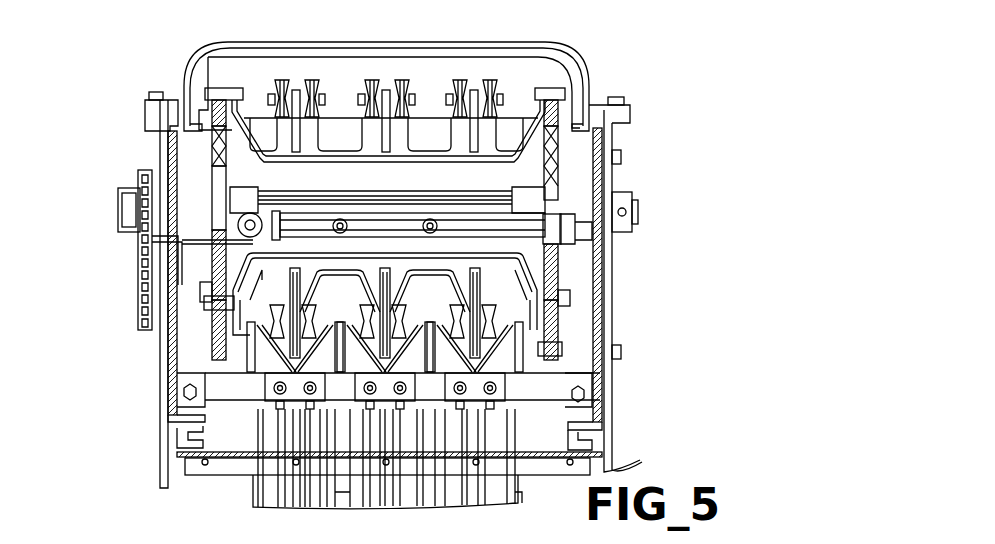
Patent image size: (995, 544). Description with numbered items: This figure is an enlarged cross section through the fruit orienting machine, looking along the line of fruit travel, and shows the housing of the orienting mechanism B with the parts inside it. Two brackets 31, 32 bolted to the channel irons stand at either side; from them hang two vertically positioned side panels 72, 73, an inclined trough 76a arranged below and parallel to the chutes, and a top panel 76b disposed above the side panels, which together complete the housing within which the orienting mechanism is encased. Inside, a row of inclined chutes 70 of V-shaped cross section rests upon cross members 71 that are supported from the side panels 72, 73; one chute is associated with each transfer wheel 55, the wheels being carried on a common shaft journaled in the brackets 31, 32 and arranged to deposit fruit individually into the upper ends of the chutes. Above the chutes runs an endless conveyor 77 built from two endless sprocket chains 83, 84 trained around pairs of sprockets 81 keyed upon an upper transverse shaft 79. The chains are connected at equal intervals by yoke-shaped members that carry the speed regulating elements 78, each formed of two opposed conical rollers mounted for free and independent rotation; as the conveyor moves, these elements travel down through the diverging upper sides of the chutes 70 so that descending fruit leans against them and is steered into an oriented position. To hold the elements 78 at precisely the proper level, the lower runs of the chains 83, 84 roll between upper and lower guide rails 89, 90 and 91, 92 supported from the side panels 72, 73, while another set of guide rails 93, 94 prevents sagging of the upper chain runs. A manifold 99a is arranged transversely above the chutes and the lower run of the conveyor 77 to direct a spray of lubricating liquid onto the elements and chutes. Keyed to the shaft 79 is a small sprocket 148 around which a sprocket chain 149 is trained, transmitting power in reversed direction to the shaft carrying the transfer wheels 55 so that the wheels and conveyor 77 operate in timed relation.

The bracket 31 is at (163, 436).
The bracket 32 is at (607, 440).
The transfer wheel 55 is at (275, 493).
The inclined chute 70 is at (277, 353).
The cross member 71 is at (227, 397).
The side panel 72 is at (595, 428).
The side panel 73 is at (172, 394).
The inclined trough 76a is at (600, 478).
The top panel 76b is at (590, 72).
The endless conveyor 77 is at (578, 97).
The speed regulating element 78 is at (492, 167).
The upper transverse shaft 79 is at (400, 202).
The sprocket 81 is at (226, 178).
The sprocket chain 83 is at (207, 323).
The sprocket chain 84 is at (560, 330).
The upper guide rail 89 is at (230, 290).
The lower guide rail 90 is at (210, 347).
The upper guide rail 91 is at (543, 293).
The lower guide rail 92 is at (560, 344).
The guide rail 93 is at (232, 125).
The guide rail 94 is at (600, 133).
The manifold 99a is at (562, 240).
The small sprocket 148 is at (130, 210).
The sprocket chain 149 is at (140, 274).
The orienting mechanism B is at (574, 176).